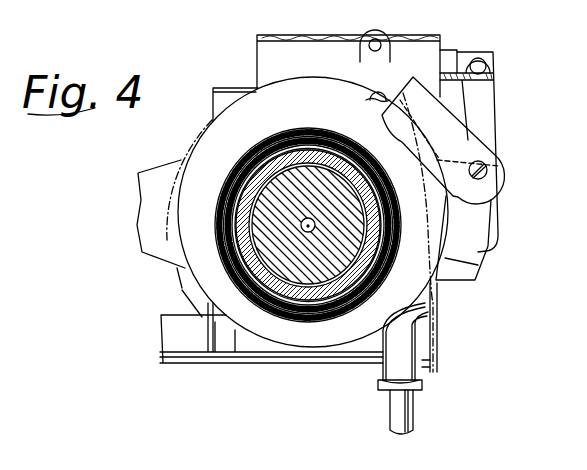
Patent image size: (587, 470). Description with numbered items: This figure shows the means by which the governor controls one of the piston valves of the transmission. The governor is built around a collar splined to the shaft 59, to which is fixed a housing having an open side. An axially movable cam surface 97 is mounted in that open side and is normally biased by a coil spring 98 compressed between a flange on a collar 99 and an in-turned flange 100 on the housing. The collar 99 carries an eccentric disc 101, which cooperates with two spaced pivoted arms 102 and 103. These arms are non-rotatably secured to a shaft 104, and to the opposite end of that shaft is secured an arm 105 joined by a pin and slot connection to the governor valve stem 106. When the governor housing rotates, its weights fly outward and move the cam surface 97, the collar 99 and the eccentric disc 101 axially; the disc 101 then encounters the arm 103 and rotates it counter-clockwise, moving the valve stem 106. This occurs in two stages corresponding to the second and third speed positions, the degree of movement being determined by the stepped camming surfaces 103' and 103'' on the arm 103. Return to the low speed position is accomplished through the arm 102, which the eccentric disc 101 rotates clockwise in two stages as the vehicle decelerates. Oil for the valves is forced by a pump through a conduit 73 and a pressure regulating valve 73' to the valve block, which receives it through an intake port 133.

The shaft 59 is at (357, 223).
The conduit 73 is at (377, 356).
The pressure regulating valve 73' is at (295, 354).
The cam surface 97 is at (176, 298).
The coil spring 98 is at (290, 135).
The collar 99 is at (317, 140).
The in-turned flange 100 is at (233, 193).
The eccentric disc 101 is at (210, 143).
The pivoted arm 102 is at (457, 140).
The pivoted arm 103 is at (500, 238).
The stepped camming surface 103' is at (496, 279).
The stepped camming surface 103'' is at (470, 327).
The shaft 104 is at (500, 166).
The arm 105 is at (490, 95).
The governor valve stem 106 is at (450, 58).
The intake port 133 is at (413, 415).